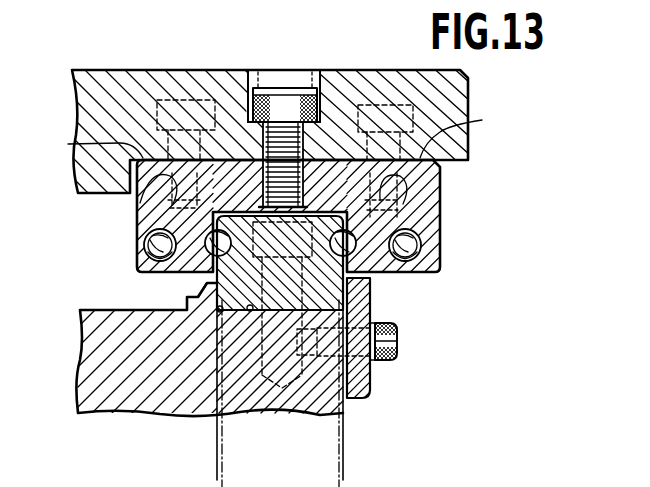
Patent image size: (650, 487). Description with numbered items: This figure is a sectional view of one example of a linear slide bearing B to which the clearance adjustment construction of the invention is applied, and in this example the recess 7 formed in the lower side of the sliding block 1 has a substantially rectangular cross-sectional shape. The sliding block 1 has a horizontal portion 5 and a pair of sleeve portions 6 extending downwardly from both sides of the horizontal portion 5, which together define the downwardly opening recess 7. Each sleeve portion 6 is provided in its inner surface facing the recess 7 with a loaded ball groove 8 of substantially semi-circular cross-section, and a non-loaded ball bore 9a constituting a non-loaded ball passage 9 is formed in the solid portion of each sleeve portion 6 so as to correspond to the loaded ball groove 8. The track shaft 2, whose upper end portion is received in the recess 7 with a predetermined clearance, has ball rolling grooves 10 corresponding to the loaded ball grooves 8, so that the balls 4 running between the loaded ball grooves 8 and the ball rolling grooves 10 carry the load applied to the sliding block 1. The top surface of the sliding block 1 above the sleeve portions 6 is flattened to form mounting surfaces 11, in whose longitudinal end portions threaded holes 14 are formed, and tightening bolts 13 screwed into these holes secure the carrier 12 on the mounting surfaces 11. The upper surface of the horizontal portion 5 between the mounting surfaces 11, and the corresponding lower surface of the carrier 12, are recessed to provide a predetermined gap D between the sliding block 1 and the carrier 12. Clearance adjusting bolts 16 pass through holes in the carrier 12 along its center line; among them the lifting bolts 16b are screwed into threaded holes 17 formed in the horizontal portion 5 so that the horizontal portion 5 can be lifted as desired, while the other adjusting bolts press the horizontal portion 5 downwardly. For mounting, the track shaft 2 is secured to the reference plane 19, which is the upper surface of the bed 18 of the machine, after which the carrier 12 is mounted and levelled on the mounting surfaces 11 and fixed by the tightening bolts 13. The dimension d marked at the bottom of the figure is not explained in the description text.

The carrier 12 is at (98, 66).
The tightening bolts 13 is at (176, 100).
The gap D is at (240, 152).
The clearance adjusting bolts 16 is at (288, 120).
The lifting bolts 16b is at (281, 96).
The horizontal portion 5 is at (314, 162).
The recess 7 is at (298, 214).
The mounting surfaces 11 is at (278, 131).
The linear slide bearing B is at (455, 172).
The threaded holes 14 is at (140, 203).
The loaded ball groove 8 is at (196, 290).
The non-loaded ball passage 9 is at (296, 245).
The non-loaded ball bore 9a is at (152, 249).
The sliding block 1 is at (128, 263).
The sleeve portions 6 is at (436, 258).
The bed 18 is at (105, 305).
The balls 4 is at (160, 262).
The ball rolling grooves 10 is at (233, 312).
The track shaft 2 is at (207, 285).
The reference plane 19 is at (247, 314).
The threaded holes 17 is at (293, 383).
The offset distance d is at (236, 472).